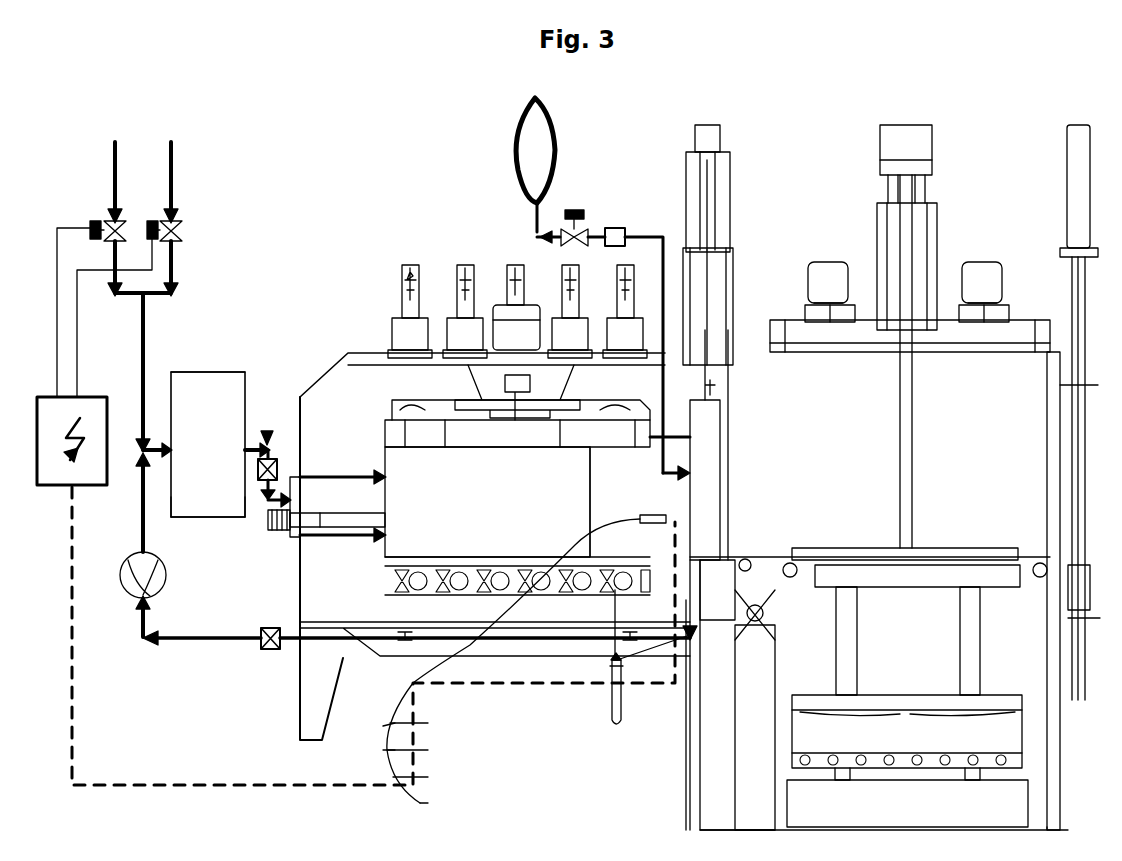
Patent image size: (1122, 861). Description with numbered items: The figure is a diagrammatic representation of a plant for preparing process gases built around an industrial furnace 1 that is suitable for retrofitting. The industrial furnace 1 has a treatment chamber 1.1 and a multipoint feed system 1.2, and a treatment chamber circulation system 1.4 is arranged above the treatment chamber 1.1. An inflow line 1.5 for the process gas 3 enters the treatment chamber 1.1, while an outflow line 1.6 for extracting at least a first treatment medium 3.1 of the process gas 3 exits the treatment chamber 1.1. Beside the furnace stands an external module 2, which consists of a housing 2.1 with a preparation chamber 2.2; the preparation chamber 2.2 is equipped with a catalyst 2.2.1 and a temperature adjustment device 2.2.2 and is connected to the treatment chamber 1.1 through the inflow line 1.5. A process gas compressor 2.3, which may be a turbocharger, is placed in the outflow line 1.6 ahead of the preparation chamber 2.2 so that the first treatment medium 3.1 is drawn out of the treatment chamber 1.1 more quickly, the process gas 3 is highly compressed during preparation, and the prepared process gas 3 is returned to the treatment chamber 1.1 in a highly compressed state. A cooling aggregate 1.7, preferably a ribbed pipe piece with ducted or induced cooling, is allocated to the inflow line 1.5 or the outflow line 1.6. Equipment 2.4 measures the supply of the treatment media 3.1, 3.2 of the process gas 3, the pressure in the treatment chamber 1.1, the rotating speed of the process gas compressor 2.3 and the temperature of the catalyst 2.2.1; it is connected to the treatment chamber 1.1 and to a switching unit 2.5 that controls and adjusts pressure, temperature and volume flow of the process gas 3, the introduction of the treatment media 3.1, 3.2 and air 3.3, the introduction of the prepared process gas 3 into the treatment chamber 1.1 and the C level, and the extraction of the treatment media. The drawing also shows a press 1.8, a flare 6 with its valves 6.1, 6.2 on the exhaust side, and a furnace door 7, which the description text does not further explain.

The industrial furnace 1 is at (432, 280).
The treatment chamber 1.1 is at (614, 668).
The multipoint feed system 1.2 is at (385, 532).
The treatment chamber circulation system 1.4 is at (475, 407).
The inflow line 1.5 is at (272, 449).
The outflow line 1.6 is at (222, 641).
The cooling aggregate 1.7 is at (278, 460).
The press 1.8 is at (790, 410).
The external module 2 is at (190, 355).
The housing 2.1 is at (217, 370).
The preparation chamber 2.2 is at (217, 517).
The catalyst 2.2.1 is at (173, 497).
The temperature adjustment device 2.2.2 is at (247, 503).
The process gas compressor 2.3 is at (143, 590).
The measuring equipment 2.4 is at (678, 499).
The switching unit 2.5 is at (37, 397).
The process gas 3 is at (267, 432).
The first treatment medium 3.1 is at (173, 497).
The second treatment medium 3.2 is at (112, 187).
The air 3.3 is at (180, 193).
The flare 6 is at (528, 205).
The flare valve 6.1 is at (574, 209).
The exhaust gas valve 6.2 is at (615, 227).
The furnace door 7 is at (710, 497).